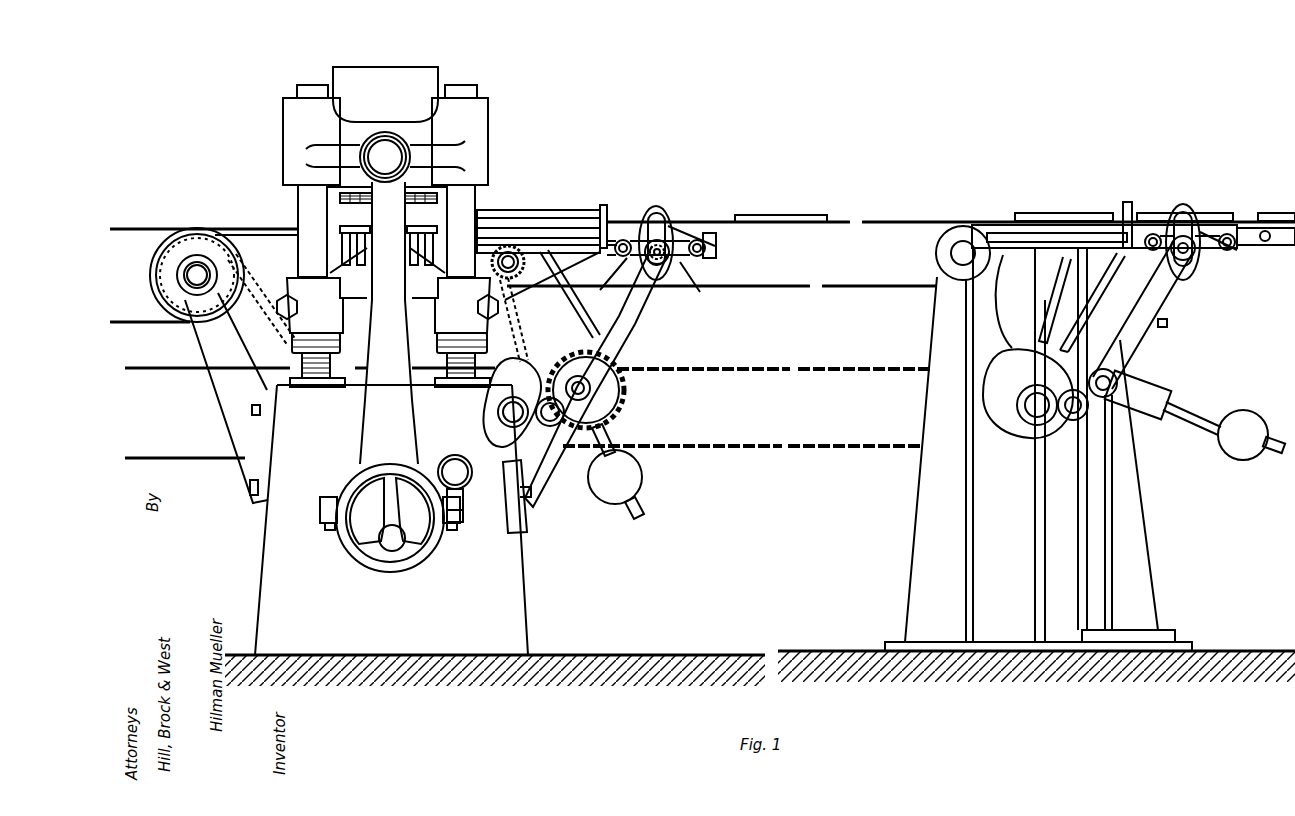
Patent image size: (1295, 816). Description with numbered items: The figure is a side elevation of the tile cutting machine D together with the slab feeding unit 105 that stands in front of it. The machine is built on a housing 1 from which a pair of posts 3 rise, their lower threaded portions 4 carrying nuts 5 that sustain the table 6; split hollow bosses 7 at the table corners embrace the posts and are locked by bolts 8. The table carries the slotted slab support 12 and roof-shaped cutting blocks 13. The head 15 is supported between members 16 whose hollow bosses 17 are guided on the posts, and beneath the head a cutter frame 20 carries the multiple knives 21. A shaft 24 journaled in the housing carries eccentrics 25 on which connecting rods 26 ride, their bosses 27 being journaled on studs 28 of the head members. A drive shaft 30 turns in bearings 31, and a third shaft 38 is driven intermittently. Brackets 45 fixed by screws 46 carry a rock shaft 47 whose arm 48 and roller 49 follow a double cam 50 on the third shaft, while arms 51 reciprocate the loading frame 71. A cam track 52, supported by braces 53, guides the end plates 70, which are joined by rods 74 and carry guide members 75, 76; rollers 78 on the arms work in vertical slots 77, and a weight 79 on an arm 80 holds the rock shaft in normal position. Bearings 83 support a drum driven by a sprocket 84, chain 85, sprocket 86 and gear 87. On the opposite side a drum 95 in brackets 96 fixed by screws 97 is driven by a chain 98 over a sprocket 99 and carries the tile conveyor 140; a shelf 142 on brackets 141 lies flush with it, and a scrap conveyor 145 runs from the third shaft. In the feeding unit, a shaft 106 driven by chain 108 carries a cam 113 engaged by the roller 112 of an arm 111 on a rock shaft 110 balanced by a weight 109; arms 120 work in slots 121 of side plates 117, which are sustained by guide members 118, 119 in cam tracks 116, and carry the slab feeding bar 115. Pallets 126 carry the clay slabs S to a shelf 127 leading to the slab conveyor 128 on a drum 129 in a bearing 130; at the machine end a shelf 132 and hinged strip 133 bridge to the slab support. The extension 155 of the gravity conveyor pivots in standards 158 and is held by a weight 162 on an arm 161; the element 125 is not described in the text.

The housing 1 is at (391, 520).
The posts 3 is at (297, 211).
The threaded portions 4 is at (322, 367).
The nuts 5 is at (333, 349).
The table 6 is at (358, 331).
The split hollow bosses 7 is at (388, 305).
The bolts 8 is at (298, 310).
The slotted slab support 12 is at (340, 229).
The roof-shaped cutting blocks 13 is at (415, 272).
The head 15 is at (384, 75).
The members 16 is at (355, 127).
The hollow bosses 17 is at (287, 125).
The cutter frame 20 is at (346, 186).
The multiple cutters or knives 21 is at (352, 208).
The shaft 24 is at (393, 550).
The eccentrics 25 is at (428, 538).
The connecting rods 26 is at (389, 382).
The bosses 27 is at (387, 134).
The studs 28 is at (385, 157).
The drive shaft 30 is at (453, 468).
The bearings 31 is at (470, 485).
The third shaft 38 is at (500, 412).
The brackets 45 is at (541, 470).
The screws 46 is at (537, 500).
The rock shaft 47 is at (580, 384).
The arm 48 is at (547, 389).
The roller 49 is at (550, 426).
The double cam 50 is at (501, 426).
The arms 51 is at (628, 318).
The cam track or slotted guide 52 is at (717, 242).
The braces 53 is at (582, 290).
The end plates 70 is at (677, 232).
The loading frame 71 is at (605, 206).
The rods 74 is at (543, 208).
The guide member 75 is at (705, 256).
The guide member 76 is at (622, 256).
The vertical slots 77 is at (659, 216).
The bosses or rollers 78 is at (684, 293).
The weight 79 is at (616, 484).
The arm 80 is at (611, 433).
The bearings 83 is at (492, 262).
The sprocket 84 is at (526, 320).
The chain 85 is at (513, 355).
The sprocket 86 is at (566, 352).
The gear 87 is at (623, 408).
The drum 95 is at (200, 230).
The brackets 96 is at (212, 383).
The screws 97 is at (258, 415).
The chain 98 is at (262, 270).
The sprocket 99 is at (162, 268).
The slab feeding unit 105 is at (924, 497).
The shaft 106 is at (1032, 424).
The chain 108 is at (766, 444).
The weight 109 is at (1248, 417).
The rock shaft 110 is at (1118, 380).
The arm 111 is at (1135, 420).
The roller 112 is at (1073, 421).
The cam 113 is at (1028, 393).
The slab feeding bar 115 is at (1132, 205).
The cam tracks or guides 116 is at (1036, 236).
The side plates 117 is at (1207, 226).
The guide member 118 is at (1153, 251).
The guide member 119 is at (1229, 251).
The arms 120 is at (1168, 293).
The slots 121 is at (1190, 215).
The guide plate 125 is at (1066, 246).
The pallets 126 is at (1015, 230).
The shelf 127 is at (993, 222).
The slab conveyor 128 is at (750, 292).
The drum 129 is at (937, 245).
The bearing 130 is at (942, 262).
The shelf 132 is at (490, 221).
The strip 133 is at (447, 222).
The tile conveyor 140 is at (152, 228).
The brackets 141 is at (264, 232).
The shelf 142 is at (247, 233).
The scrap conveyor 145 is at (170, 367).
The extension of the gravity conveyor 155 is at (1067, 260).
The standards 158 is at (1135, 495).
The arm 161 is at (1048, 316).
The weight 162 is at (1167, 322).
The cutting machine D is at (428, 66).
The clay slabs S is at (781, 214).